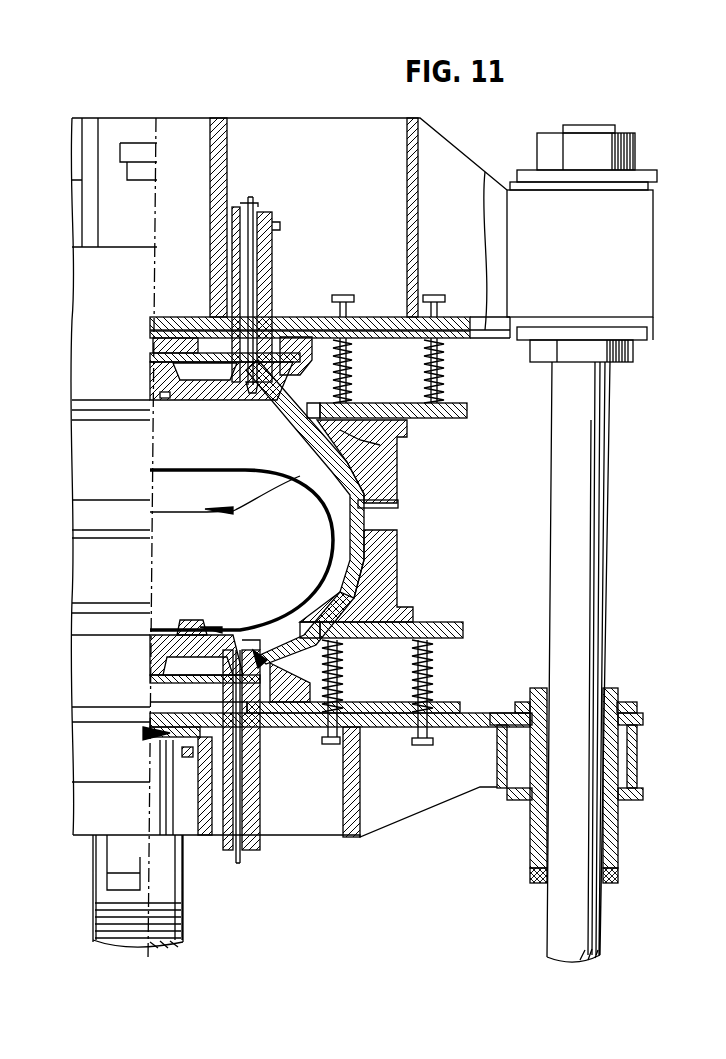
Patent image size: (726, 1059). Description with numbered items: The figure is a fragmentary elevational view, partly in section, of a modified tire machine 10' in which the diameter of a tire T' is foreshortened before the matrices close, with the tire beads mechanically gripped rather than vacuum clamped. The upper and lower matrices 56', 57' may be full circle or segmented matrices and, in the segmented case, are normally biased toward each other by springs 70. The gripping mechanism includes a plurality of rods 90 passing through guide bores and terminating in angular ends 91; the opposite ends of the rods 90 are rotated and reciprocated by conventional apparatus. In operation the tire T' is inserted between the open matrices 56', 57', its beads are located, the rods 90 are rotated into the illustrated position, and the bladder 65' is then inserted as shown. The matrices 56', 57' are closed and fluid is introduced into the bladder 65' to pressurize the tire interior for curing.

The machine 10' is at (616, 543).
The matrix 56' is at (395, 453).
The matrix 57' is at (392, 584).
The bladder 65' is at (241, 550).
The springs 70 is at (347, 364).
The rods 90 is at (252, 196).
The angular ends 91 is at (262, 390).
The tire T' is at (403, 510).